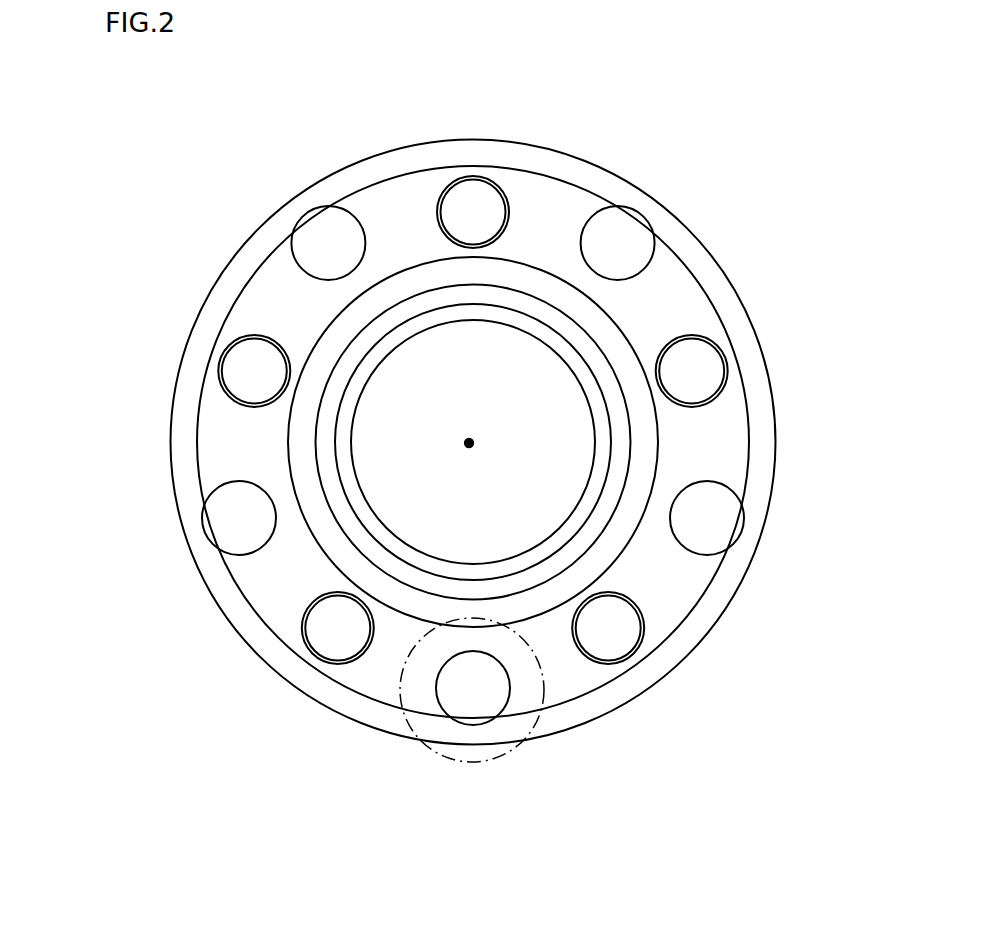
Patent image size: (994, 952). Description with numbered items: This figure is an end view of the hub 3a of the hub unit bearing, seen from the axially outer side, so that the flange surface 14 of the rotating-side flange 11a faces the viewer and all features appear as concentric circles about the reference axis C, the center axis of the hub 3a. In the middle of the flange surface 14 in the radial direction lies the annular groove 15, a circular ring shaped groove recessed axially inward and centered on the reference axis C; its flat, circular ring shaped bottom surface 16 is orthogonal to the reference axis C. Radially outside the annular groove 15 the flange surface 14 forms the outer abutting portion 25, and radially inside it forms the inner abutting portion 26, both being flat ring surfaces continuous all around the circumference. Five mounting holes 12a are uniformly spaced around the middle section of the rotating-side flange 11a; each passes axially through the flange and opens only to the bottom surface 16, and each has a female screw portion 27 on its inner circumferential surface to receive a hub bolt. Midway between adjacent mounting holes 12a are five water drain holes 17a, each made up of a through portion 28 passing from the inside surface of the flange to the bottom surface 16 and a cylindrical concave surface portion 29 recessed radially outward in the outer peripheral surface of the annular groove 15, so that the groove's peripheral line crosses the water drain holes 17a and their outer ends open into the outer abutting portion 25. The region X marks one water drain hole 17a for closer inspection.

The hub 3a is at (632, 160).
The flange surface 14 is at (372, 174).
The outer abutting portion 25 is at (590, 705).
The rotating-side flange 11a is at (737, 285).
The annular groove 15 is at (747, 463).
The bottom surface 16 is at (548, 222).
The inner abutting portion 26 is at (430, 603).
The reference axis C is at (473, 435).
The mounting holes 12a is at (450, 190).
The female screw portions 27 is at (505, 196).
The water drain holes 17a is at (165, 172).
The through portion 28 is at (312, 270).
The cylindrical concave surface portion 29 is at (306, 232).
The detail region X is at (503, 757).